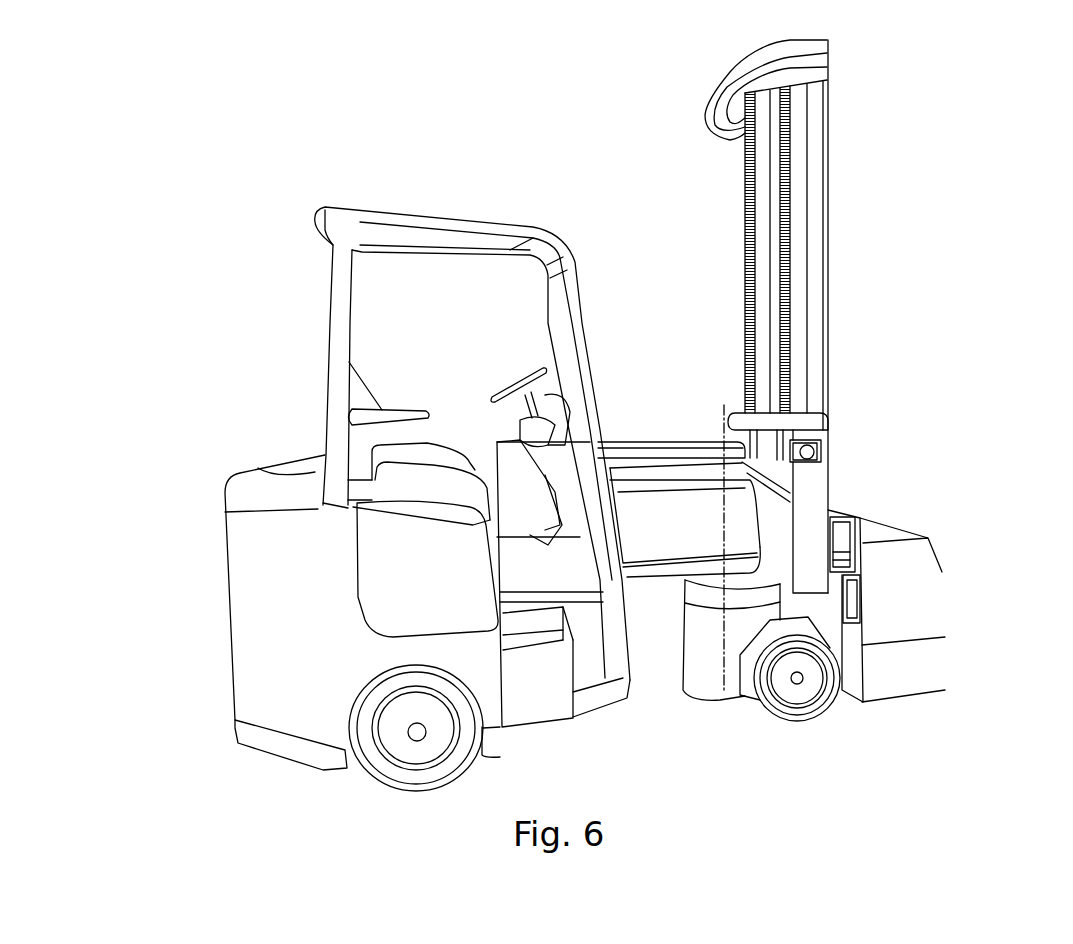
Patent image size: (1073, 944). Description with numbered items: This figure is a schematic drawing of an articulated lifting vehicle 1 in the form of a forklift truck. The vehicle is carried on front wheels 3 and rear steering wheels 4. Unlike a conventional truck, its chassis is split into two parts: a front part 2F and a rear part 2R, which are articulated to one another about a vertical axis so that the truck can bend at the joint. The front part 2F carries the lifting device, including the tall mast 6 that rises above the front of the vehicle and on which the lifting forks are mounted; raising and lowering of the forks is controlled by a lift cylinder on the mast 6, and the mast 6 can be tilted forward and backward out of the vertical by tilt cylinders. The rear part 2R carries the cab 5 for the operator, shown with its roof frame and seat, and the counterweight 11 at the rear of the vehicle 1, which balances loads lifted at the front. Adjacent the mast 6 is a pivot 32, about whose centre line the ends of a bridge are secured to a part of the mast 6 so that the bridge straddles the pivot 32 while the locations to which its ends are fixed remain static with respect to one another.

The lifting vehicle 1 is at (853, 161).
The mast 6 is at (820, 240).
The cab 5 is at (337, 353).
The pivot 32 is at (825, 460).
The counterweight 11 is at (252, 552).
The rear part 2R is at (343, 657).
The rear steering wheels 4 is at (372, 750).
The front part 2F is at (765, 594).
The front wheels 3 is at (815, 705).